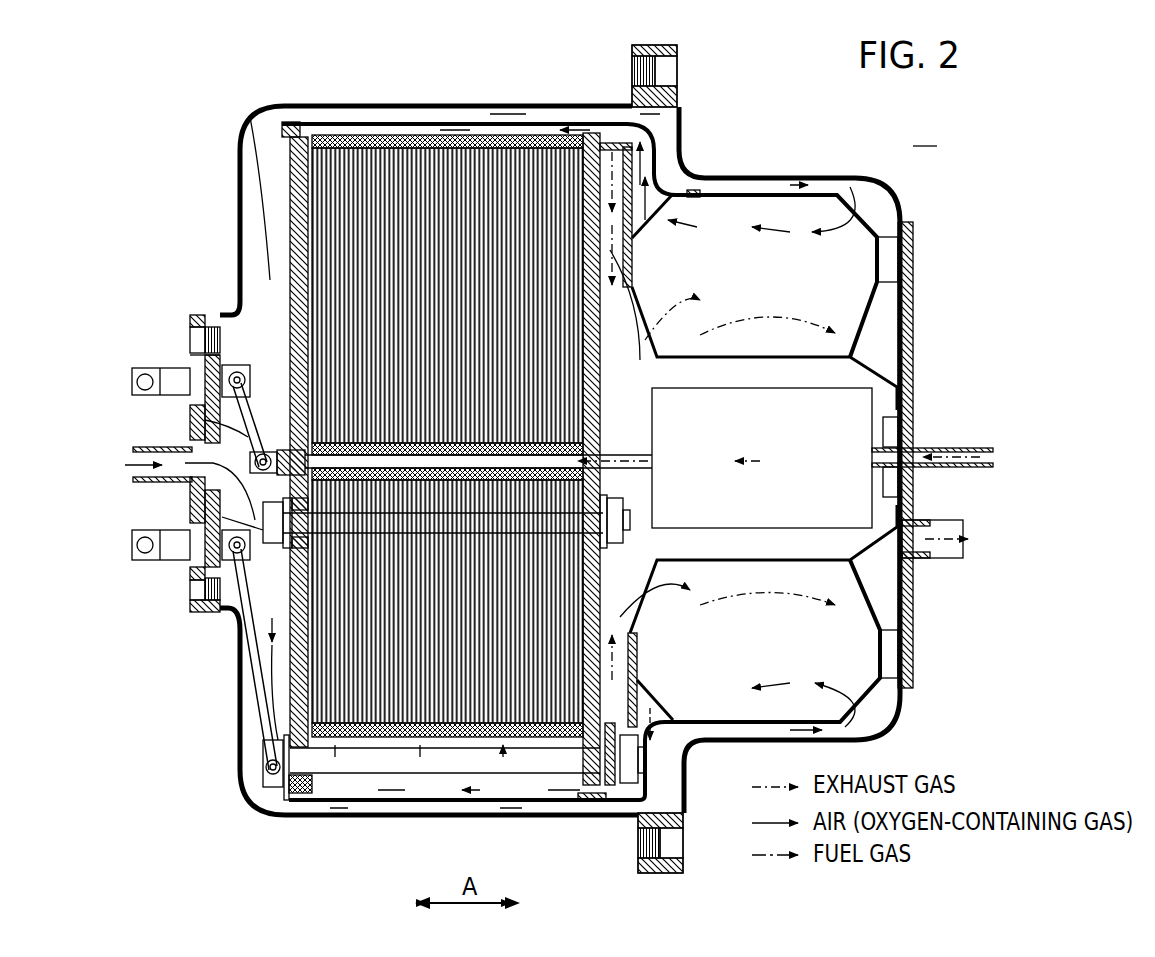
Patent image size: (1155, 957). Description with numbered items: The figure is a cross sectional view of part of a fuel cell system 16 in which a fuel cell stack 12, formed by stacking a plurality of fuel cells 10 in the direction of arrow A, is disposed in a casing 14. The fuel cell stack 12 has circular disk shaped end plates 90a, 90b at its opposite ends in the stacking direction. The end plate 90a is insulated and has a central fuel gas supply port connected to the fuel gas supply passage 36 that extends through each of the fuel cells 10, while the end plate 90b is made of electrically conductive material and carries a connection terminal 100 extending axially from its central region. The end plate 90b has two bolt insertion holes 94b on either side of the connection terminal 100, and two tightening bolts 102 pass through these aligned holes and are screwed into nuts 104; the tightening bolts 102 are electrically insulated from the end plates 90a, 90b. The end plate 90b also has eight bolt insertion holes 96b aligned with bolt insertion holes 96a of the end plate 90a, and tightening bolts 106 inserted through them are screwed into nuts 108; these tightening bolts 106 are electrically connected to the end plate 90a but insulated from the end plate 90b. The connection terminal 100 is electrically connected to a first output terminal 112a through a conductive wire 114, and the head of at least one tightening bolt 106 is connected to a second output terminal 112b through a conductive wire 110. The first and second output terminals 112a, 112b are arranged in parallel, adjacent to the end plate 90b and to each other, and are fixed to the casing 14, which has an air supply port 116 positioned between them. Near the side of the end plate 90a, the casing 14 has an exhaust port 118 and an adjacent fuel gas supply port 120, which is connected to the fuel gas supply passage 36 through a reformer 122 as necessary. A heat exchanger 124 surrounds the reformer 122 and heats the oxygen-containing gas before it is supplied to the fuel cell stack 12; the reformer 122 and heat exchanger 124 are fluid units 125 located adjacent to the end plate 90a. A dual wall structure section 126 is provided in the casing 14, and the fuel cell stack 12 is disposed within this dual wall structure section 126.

The fuel cell 10 is at (370, 137).
The fuel cell stack 12 is at (527, 117).
The casing 14 is at (738, 150).
The fuel cell system 16 is at (925, 133).
The fuel gas supply passage 36 is at (555, 440).
The end plate 90a is at (594, 373).
The end plate 90b is at (300, 210).
The bolt insertion hole 94b is at (205, 510).
The bolt insertion hole 96a is at (580, 805).
The bolt insertion hole 96b is at (315, 795).
The connection terminal 100 is at (264, 454).
The tightening bolt 102 is at (272, 542).
The nut 104 is at (615, 520).
The tightening bolt 106 is at (415, 772).
The nut 108 is at (642, 760).
The conductive wire 110 is at (255, 660).
The first output terminal 112a is at (145, 368).
The second output terminal 112b is at (145, 560).
The conductive wire 114 is at (205, 418).
The air supply port 116 is at (135, 447).
The exhaust port 118 is at (963, 548).
The fuel gas supply port 120 is at (993, 458).
The reformer 122 is at (762, 458).
The heat exchanger 124 is at (758, 457).
The fluid unit 125 is at (856, 335).
The dual wall structure section 126 is at (462, 802).